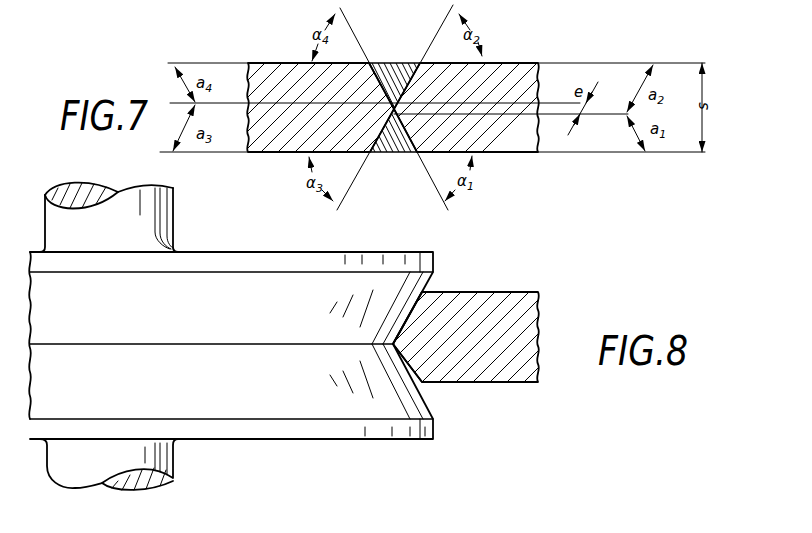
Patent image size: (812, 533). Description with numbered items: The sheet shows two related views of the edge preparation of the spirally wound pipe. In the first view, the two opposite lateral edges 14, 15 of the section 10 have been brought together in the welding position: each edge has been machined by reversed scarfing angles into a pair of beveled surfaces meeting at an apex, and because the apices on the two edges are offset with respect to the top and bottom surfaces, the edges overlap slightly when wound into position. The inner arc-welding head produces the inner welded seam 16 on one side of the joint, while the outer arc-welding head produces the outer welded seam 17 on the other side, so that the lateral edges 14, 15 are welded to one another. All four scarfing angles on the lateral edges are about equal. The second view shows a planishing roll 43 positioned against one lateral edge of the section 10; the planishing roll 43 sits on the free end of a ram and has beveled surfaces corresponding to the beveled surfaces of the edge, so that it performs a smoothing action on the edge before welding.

In FIG. 8, the section 10 is at (507, 362).
In FIG. 7, the lateral edge 14 is at (498, 61).
In FIG. 8, the lateral edge 14 is at (438, 289).
In FIG. 7, the lateral edge 15 is at (297, 61).
In FIG. 7, the inner welded seam 16 is at (397, 73).
In FIG. 7, the outer welded seam 17 is at (395, 147).
In FIG. 8, the planishing roll 43 is at (252, 407).